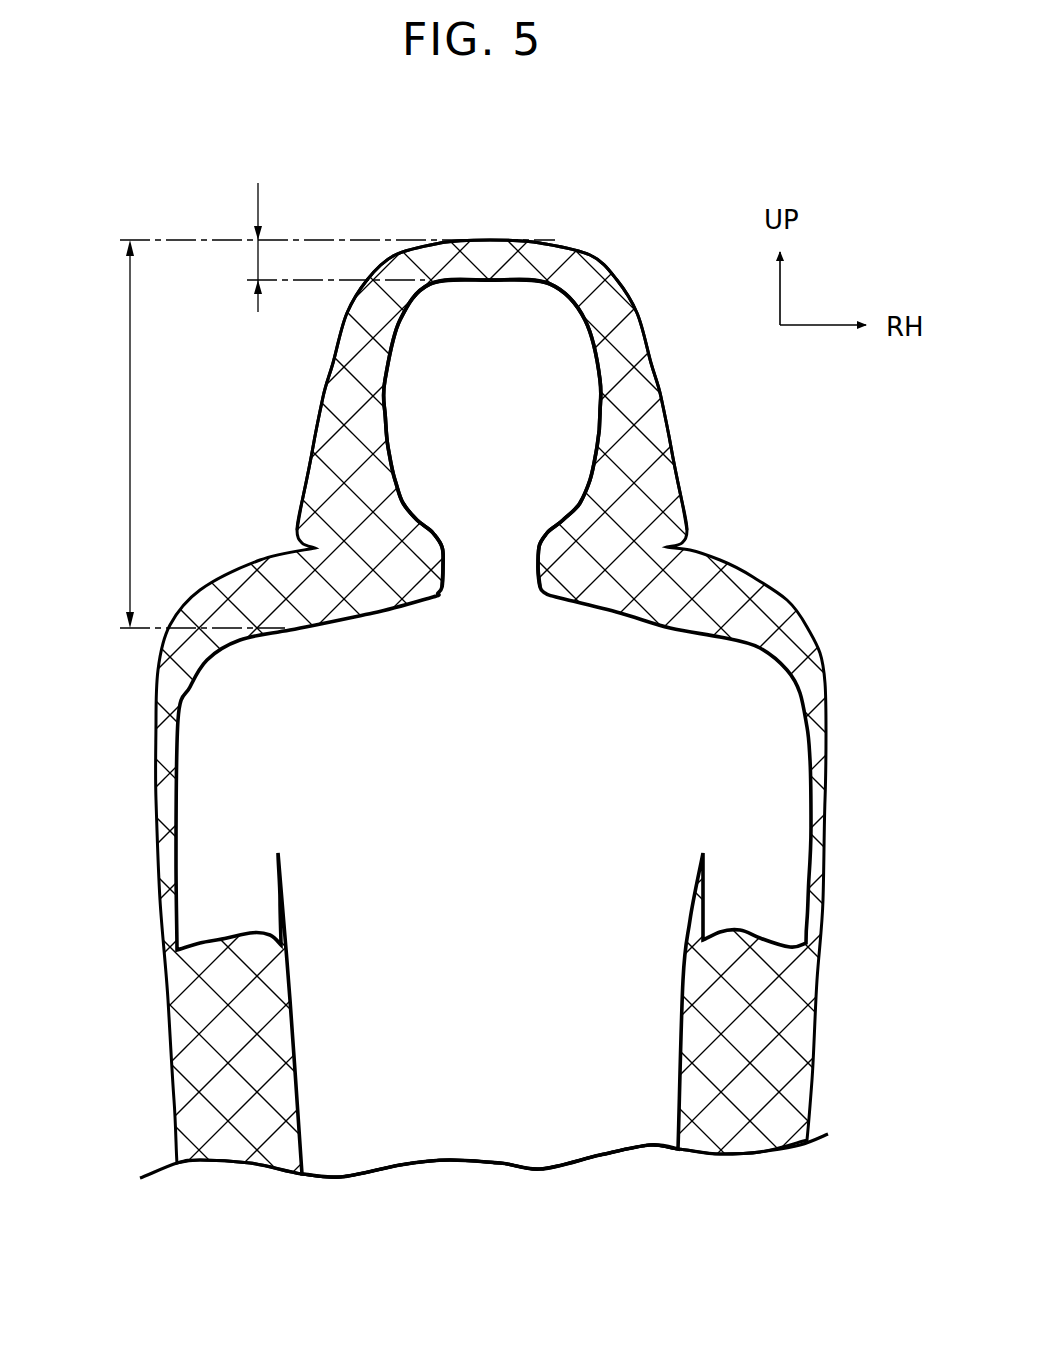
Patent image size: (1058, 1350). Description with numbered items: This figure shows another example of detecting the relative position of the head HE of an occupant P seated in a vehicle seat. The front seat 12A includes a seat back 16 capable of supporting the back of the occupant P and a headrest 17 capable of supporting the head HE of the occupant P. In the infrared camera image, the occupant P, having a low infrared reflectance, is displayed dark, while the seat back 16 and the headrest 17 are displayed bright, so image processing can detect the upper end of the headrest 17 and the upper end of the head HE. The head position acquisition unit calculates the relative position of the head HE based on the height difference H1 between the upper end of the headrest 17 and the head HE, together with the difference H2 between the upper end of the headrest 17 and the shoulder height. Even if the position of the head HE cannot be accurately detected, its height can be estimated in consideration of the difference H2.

The front seat 12A is at (753, 565).
The seat back 16 is at (157, 737).
The headrest 17 is at (552, 240).
The occupant P is at (784, 658).
The head HE is at (601, 426).
The height difference H1 is at (258, 258).
The difference H2 is at (130, 417).